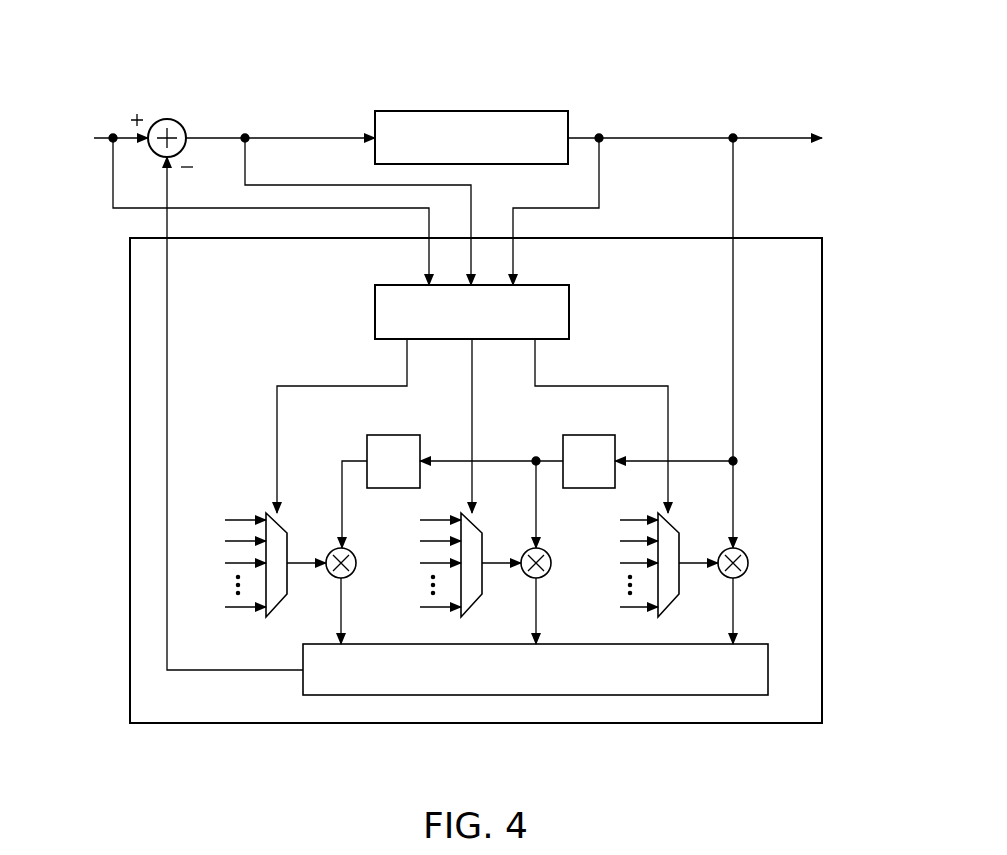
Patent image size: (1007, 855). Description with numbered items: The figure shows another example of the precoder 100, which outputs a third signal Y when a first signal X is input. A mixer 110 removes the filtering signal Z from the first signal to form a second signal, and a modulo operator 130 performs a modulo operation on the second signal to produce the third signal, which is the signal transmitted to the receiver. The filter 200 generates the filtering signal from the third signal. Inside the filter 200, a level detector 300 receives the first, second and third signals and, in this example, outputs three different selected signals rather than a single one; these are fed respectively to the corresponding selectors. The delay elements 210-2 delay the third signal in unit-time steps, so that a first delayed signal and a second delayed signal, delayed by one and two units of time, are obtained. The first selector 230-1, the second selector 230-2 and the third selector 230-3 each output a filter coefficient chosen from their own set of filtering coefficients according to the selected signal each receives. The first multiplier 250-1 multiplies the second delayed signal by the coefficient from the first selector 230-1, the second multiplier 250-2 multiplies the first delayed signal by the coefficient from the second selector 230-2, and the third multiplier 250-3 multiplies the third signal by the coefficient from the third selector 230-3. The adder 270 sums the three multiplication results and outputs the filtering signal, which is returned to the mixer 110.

The precoder 100 is at (767, 35).
The mixer 110 is at (172, 120).
The modulo operator 130 is at (522, 111).
The filter 200 is at (767, 238).
The level detector 300 is at (522, 285).
The second delay element 210-2 is at (393, 435).
The first selector 230-1 is at (287, 533).
The second selector 230-2 is at (482, 533).
The third selector 230-3 is at (679, 533).
The first multiplier 250-1 is at (328, 575).
The second multiplier 250-2 is at (525, 575).
The third multiplier 250-3 is at (745, 552).
The adder 270 is at (743, 644).